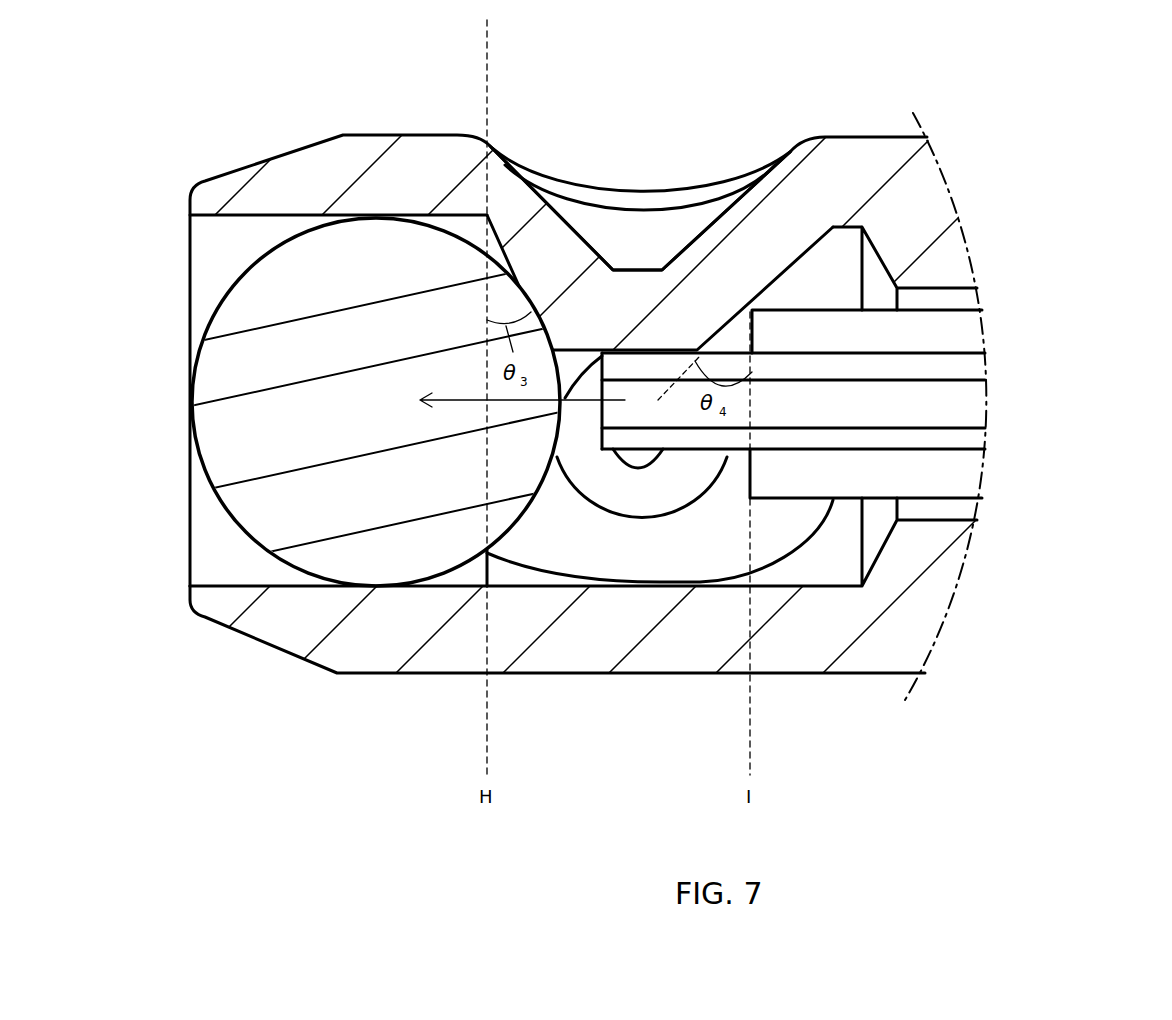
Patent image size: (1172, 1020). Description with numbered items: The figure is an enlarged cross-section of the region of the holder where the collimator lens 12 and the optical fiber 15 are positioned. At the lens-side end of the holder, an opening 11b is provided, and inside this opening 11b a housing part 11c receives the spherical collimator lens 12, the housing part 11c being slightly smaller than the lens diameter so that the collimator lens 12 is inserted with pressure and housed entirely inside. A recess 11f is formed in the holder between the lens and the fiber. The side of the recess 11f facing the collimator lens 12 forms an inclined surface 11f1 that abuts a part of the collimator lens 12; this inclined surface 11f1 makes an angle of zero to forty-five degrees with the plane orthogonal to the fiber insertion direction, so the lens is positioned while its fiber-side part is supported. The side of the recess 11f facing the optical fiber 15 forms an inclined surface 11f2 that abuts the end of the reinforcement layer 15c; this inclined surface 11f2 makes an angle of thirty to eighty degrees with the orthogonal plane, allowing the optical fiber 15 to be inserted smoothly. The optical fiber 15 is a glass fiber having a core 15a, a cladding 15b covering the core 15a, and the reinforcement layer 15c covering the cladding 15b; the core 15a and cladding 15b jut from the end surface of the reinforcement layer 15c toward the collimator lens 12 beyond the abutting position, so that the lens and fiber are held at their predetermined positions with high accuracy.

The opening 11b is at (190, 268).
The housing part 11c is at (205, 560).
The recess 11f is at (697, 232).
The inclined surface 11f1 is at (490, 277).
The inclined surface 11f2 is at (792, 264).
The collimator lens 12 is at (205, 392).
The optical fiber 15 is at (856, 413).
The core 15a is at (850, 401).
The cladding 15b is at (978, 370).
The reinforcement layer 15c is at (978, 333).